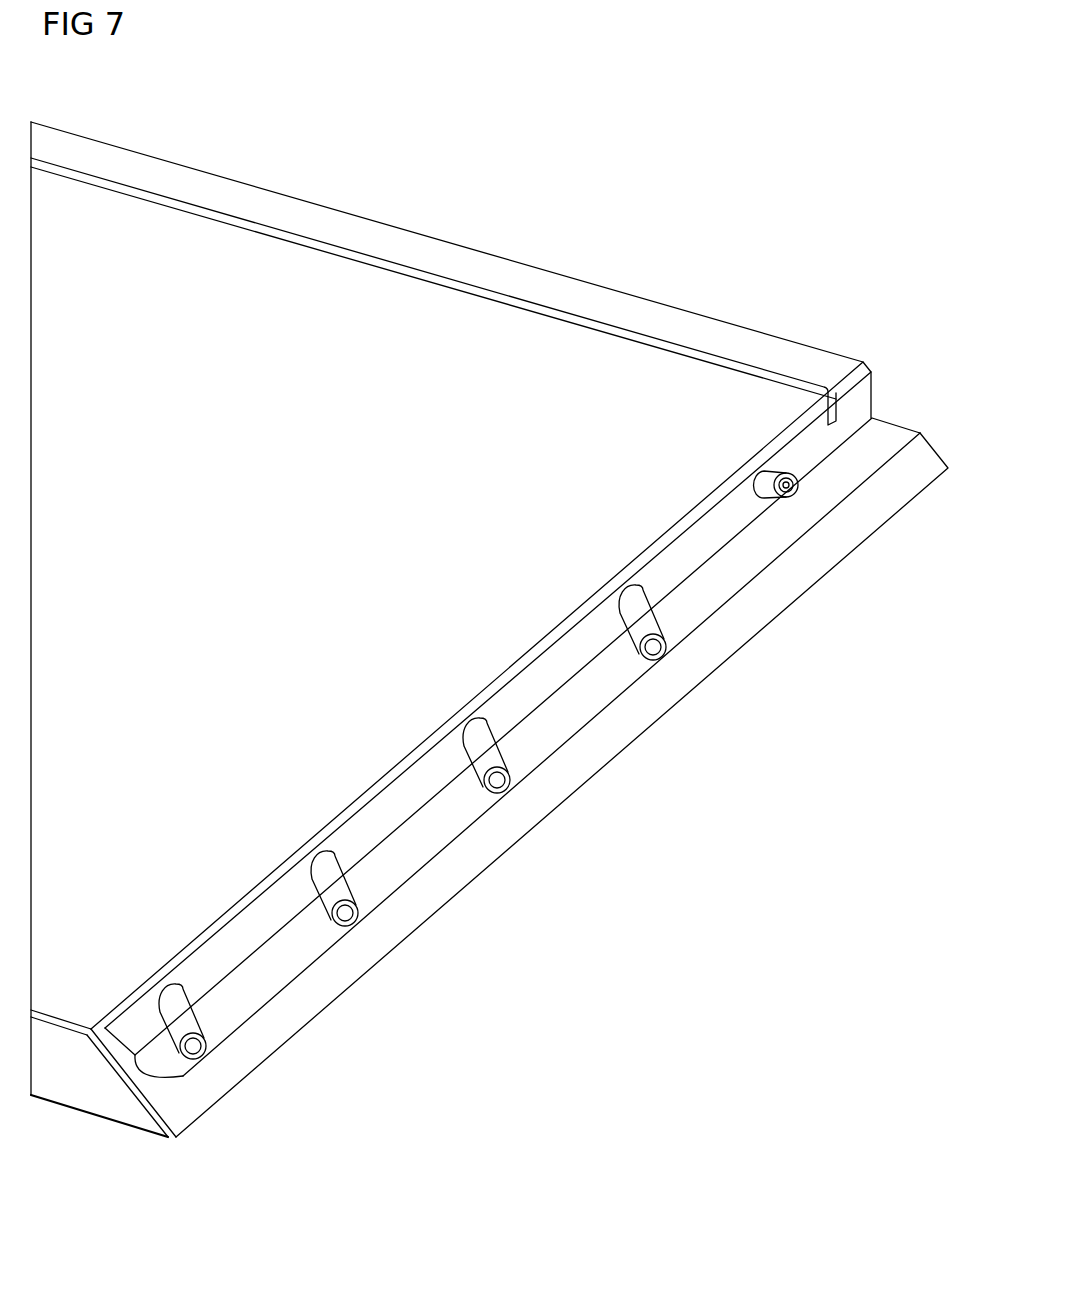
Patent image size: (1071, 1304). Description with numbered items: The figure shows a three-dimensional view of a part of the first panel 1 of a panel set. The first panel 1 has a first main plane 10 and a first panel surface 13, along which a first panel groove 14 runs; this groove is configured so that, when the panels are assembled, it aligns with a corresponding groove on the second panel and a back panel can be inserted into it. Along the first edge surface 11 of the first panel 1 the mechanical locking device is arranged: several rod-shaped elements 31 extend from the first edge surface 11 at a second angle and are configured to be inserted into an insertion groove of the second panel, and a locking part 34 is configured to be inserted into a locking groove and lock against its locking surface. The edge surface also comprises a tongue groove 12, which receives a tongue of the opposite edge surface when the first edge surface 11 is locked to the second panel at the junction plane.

The first panel 1 is at (528, 265).
The first main plane 10 is at (168, 242).
The first edge surface 11 is at (187, 1098).
The tongue groove 12 is at (380, 845).
The first panel surface 13 is at (612, 386).
The first panel groove 14 is at (413, 270).
The rod-shaped element 31 is at (486, 753).
The locking part 34 is at (773, 473).